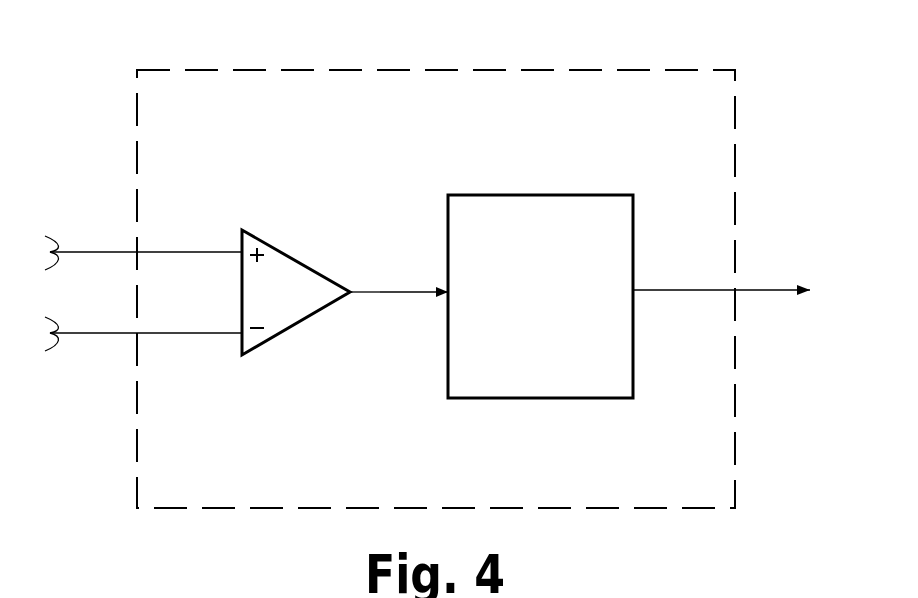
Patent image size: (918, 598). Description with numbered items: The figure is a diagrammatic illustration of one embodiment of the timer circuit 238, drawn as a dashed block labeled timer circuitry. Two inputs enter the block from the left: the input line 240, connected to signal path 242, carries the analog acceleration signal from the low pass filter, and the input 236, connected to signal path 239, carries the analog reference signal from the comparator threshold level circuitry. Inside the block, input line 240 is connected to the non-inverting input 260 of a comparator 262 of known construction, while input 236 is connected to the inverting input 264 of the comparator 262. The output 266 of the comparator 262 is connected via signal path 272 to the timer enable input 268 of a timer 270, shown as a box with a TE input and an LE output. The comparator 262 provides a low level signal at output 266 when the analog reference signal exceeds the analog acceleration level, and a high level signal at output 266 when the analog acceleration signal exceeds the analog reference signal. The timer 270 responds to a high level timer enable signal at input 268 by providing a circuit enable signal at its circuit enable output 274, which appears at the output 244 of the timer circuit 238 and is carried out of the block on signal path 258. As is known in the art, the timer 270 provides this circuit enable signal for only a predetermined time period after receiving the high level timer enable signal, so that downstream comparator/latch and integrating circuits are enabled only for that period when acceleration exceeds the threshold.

The timer circuit 238 is at (526, 70).
The signal path 242 is at (73, 252).
The input line 240 is at (177, 252).
The signal path 239 is at (78, 333).
The input 236 is at (170, 333).
The comparator 262 is at (297, 260).
The non-inverting input 260 is at (242, 250).
The inverting input 264 is at (240, 336).
The output 266 is at (352, 296).
The signal path 272 is at (404, 295).
The timer 270 is at (535, 197).
The timer enable input 268 is at (447, 286).
The circuit enable output 274 is at (636, 290).
The output 244 is at (738, 292).
The signal path 258 is at (765, 290).